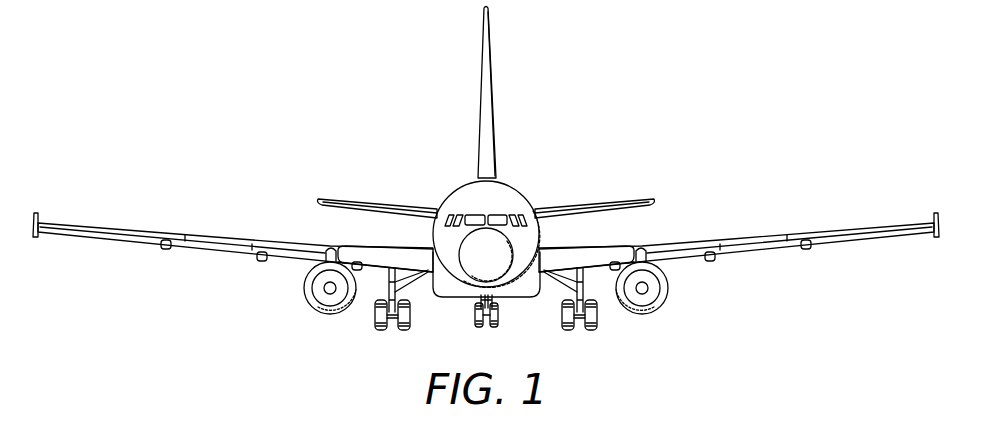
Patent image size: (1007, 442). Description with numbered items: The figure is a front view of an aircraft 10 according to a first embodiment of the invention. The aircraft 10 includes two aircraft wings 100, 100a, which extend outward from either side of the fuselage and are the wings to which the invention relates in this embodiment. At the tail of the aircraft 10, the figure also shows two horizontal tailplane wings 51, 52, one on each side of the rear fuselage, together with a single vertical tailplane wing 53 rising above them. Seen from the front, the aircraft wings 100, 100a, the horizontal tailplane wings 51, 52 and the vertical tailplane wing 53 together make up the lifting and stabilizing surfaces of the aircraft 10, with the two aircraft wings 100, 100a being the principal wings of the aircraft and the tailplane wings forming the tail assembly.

The aircraft 10 is at (287, 47).
The horizontal tailplane wing 51 is at (363, 199).
The horizontal tailplane wing 52 is at (604, 203).
The vertical tailplane wing 53 is at (490, 40).
The aircraft wing 100 is at (140, 241).
The aircraft wing 100a is at (775, 243).